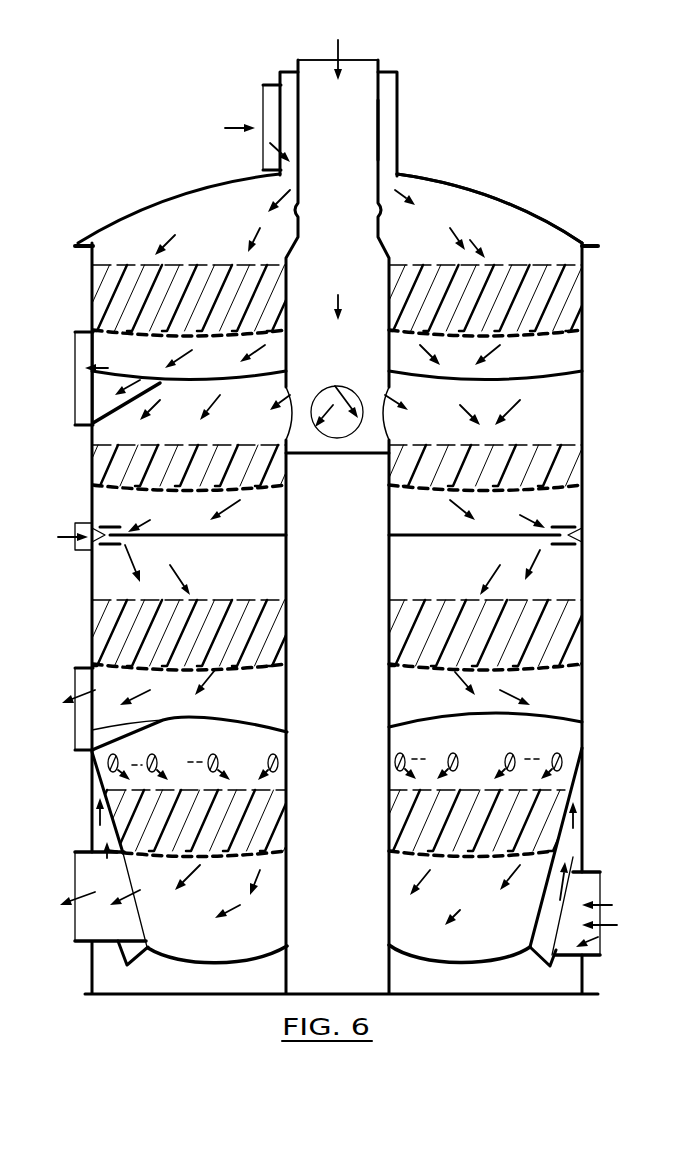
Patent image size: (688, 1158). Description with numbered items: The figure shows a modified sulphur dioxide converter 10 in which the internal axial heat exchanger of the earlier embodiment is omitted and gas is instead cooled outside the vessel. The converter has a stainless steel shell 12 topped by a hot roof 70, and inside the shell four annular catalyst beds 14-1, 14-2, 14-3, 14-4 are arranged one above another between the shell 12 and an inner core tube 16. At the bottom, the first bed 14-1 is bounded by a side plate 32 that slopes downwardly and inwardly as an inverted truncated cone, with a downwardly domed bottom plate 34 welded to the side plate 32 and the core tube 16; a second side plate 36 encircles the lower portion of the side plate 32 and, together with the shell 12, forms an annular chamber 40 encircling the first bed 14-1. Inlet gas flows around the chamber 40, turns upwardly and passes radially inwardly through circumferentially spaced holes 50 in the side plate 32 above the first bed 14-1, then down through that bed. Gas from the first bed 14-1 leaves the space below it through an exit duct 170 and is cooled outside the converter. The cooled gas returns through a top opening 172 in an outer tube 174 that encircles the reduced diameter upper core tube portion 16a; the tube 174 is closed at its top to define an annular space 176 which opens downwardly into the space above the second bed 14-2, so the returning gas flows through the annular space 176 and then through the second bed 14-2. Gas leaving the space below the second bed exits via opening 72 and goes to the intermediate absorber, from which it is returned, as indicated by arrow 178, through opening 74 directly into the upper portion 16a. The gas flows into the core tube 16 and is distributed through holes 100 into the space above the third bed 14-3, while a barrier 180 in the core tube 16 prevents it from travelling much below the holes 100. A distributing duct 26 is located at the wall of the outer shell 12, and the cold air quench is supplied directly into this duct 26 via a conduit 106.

The converter 10 is at (178, 178).
The shell 12 is at (584, 572).
The first catalyst bed 14-1 is at (283, 830).
The second catalyst bed 14-2 is at (108, 297).
The third catalyst bed 14-3 is at (108, 463).
The fourth catalyst bed 14-4 is at (110, 630).
The core tube 16 is at (291, 700).
The upper portion of core tube 16a is at (300, 153).
The distributing duct 26 is at (108, 549).
The side plate 32 is at (147, 947).
The bottom plate 34 is at (218, 960).
The second side plate 36 is at (120, 952).
The annular chamber 40 is at (575, 842).
The holes 50 is at (505, 757).
The roof 70 is at (490, 192).
The opening 72 is at (80, 392).
The opening 74 is at (320, 70).
The holes 100 is at (336, 386).
The conduit 106 is at (93, 527).
The exit duct 170 is at (86, 868).
The top opening 172 is at (275, 108).
The outer tube 174 is at (398, 97).
The annular space 176 is at (385, 146).
The arrow 178 is at (340, 63).
The barrier 180 is at (352, 456).